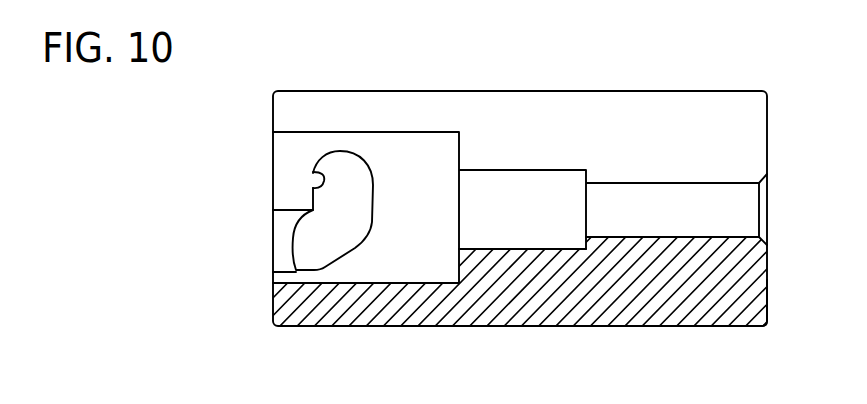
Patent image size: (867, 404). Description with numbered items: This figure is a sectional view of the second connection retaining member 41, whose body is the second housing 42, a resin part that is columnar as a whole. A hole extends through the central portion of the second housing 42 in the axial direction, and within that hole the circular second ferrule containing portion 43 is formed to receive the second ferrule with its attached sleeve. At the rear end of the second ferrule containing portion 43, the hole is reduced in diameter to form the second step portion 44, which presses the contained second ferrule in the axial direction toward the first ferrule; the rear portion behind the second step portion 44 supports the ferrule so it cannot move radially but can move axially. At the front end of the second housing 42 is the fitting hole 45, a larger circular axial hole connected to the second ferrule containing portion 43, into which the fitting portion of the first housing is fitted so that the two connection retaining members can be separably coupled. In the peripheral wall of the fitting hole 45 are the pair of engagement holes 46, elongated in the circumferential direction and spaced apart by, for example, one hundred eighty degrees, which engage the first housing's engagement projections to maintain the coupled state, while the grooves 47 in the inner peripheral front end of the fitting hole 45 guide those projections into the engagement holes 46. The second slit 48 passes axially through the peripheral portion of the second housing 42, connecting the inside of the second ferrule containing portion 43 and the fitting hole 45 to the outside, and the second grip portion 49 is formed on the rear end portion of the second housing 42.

The second connection retaining member 41 is at (335, 65).
The second housing 42 is at (655, 312).
The second ferrule containing portion 43 is at (489, 248).
The second step portion 44 is at (567, 250).
The fitting hole 45 is at (370, 281).
The engagement holes 46 is at (313, 172).
The grooves 47 is at (284, 240).
The second slit 48 is at (518, 118).
The second grip portion 49 is at (737, 328).